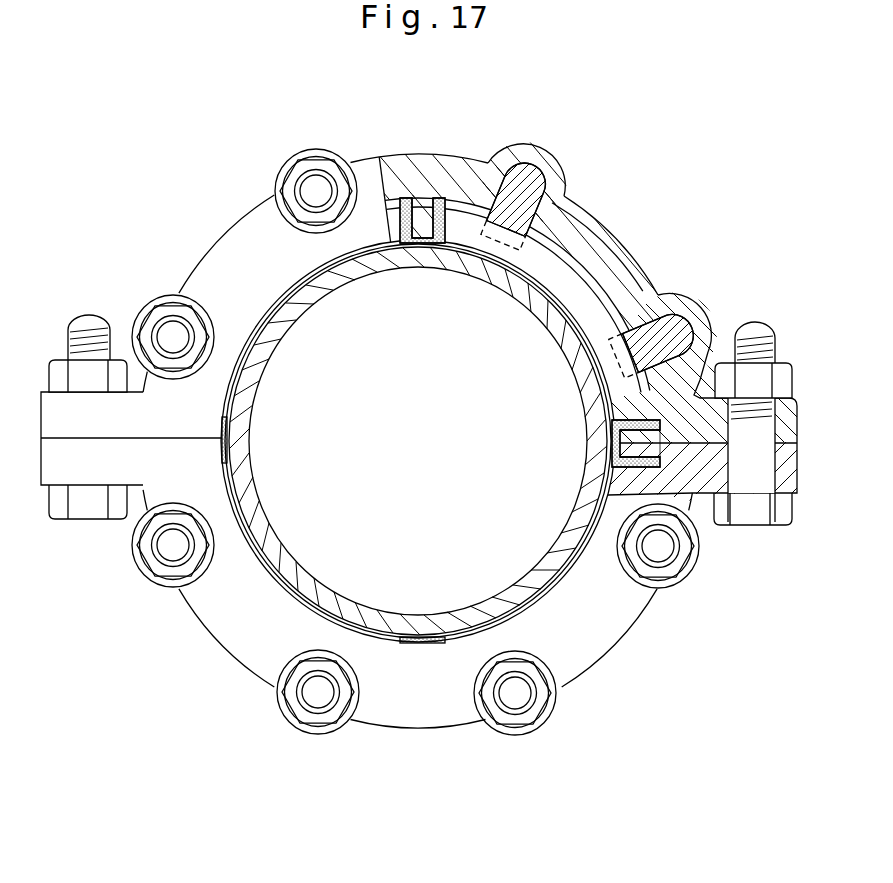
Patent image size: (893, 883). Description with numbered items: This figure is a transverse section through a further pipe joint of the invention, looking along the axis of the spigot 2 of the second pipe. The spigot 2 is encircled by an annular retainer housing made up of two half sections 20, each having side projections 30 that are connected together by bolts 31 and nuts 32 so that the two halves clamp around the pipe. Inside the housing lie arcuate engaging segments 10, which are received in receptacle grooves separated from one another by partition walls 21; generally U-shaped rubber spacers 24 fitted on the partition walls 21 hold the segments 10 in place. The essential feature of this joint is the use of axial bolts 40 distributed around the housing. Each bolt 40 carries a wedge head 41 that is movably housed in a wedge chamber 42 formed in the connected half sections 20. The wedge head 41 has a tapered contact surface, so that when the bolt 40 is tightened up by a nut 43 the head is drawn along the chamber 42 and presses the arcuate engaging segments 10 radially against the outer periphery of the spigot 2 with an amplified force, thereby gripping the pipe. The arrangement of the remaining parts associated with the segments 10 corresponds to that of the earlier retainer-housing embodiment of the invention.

The spigot 2 is at (388, 262).
The arcuate engaging segments 10 is at (374, 268).
The half sections 20 is at (237, 222).
The partition walls 21 is at (423, 248).
The rubber spacers 24 is at (407, 200).
The side projections 30 is at (48, 407).
The bolts 31 is at (95, 503).
The nuts 32 is at (118, 372).
The axial bolts 40 is at (320, 183).
The wedge head 41 is at (548, 163).
The wedge chamber 42 is at (520, 165).
The nut 43 is at (338, 152).